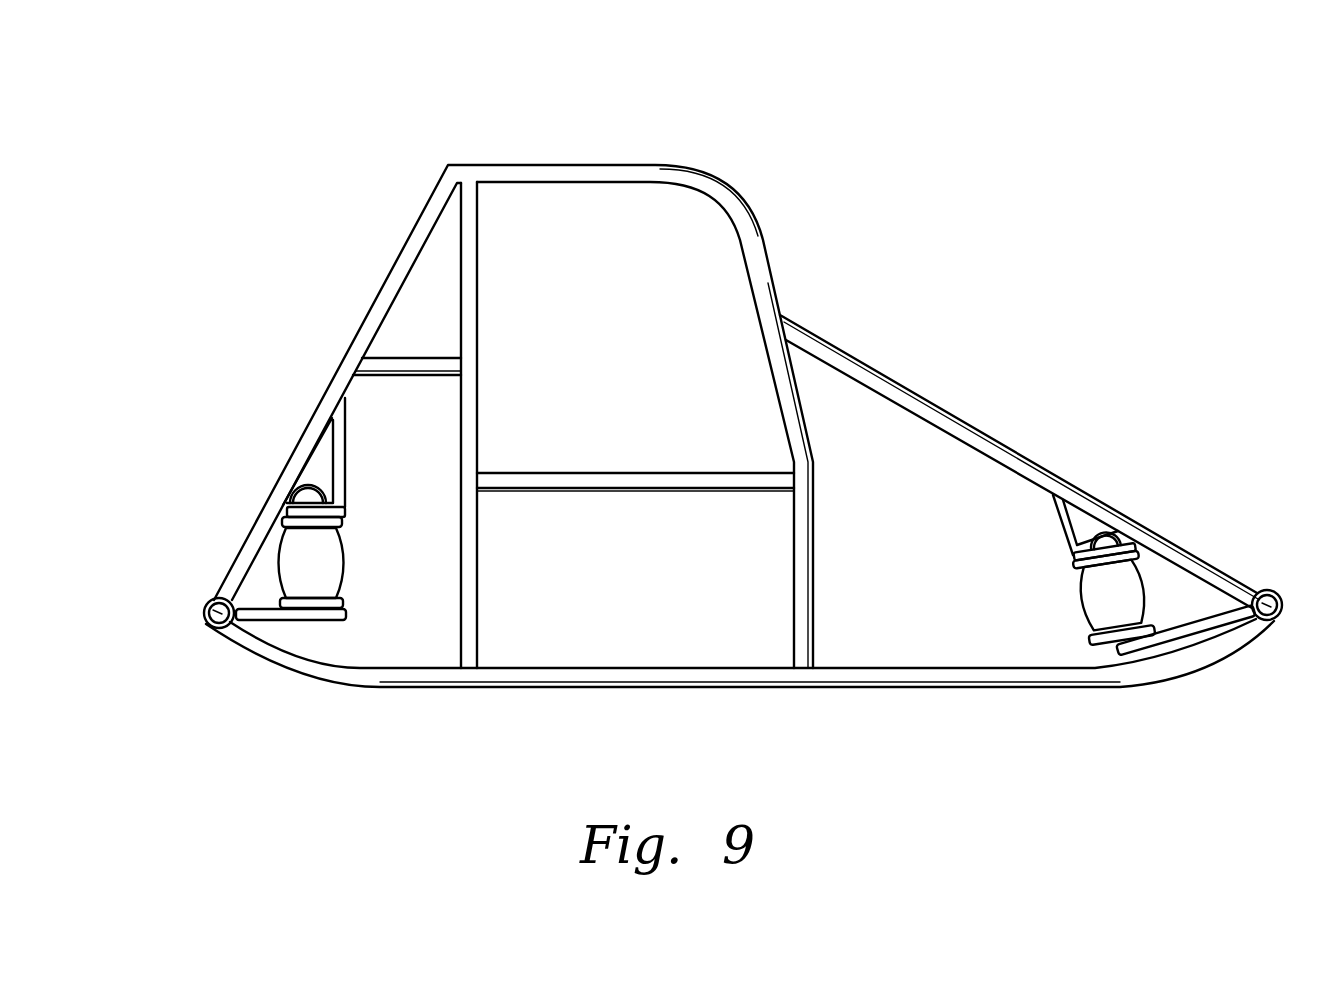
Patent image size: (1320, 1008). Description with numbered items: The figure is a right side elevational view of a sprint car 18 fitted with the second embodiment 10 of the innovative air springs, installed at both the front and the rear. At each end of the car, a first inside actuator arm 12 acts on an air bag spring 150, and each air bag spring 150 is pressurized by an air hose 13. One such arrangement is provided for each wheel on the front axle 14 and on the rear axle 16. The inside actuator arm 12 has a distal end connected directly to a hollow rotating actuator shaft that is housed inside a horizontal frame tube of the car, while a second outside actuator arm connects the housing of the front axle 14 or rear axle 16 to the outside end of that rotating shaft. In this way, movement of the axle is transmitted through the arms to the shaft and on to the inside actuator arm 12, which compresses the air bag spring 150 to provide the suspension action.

The second embodiment 10 is at (848, 160).
The first inside actuator arm 12 is at (307, 621).
The air hose 13 is at (313, 481).
The front axle 14 is at (1282, 596).
The rear axle 16 is at (207, 627).
The sprint car 18 is at (656, 340).
The air bag spring 150 is at (332, 563).